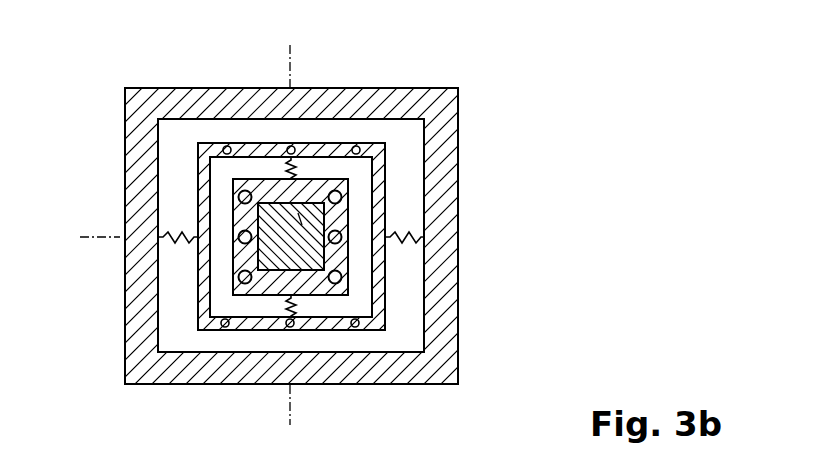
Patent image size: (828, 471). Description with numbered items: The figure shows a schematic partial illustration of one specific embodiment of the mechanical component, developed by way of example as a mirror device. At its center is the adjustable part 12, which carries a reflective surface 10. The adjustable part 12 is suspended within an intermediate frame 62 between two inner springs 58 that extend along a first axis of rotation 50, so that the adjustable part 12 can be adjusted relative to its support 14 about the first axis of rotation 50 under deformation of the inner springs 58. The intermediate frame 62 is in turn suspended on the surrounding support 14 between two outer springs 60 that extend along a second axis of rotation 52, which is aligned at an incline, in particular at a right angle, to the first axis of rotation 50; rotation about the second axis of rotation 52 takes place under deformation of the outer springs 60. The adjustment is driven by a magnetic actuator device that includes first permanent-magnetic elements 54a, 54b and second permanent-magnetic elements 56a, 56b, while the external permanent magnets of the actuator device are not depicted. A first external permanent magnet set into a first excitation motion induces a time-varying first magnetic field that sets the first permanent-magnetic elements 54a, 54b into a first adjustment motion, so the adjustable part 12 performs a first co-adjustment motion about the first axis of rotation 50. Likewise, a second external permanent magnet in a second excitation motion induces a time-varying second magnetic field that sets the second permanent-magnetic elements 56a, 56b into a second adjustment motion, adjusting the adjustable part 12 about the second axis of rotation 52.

The reflective surface 10 is at (322, 204).
The adjustable part 12 is at (270, 143).
The support 14 is at (153, 363).
The first axis of rotation 50 is at (290, 405).
The second axis of rotation 52 is at (458, 238).
The first permanent-magnetic element 54a is at (245, 244).
The first permanent-magnetic element 54b is at (337, 284).
The second permanent-magnetic element 56a is at (285, 145).
The second permanent-magnetic element 56b is at (287, 327).
The inner spring 58 is at (292, 168).
The outer spring 60 is at (173, 230).
The intermediate frame 62 is at (380, 307).